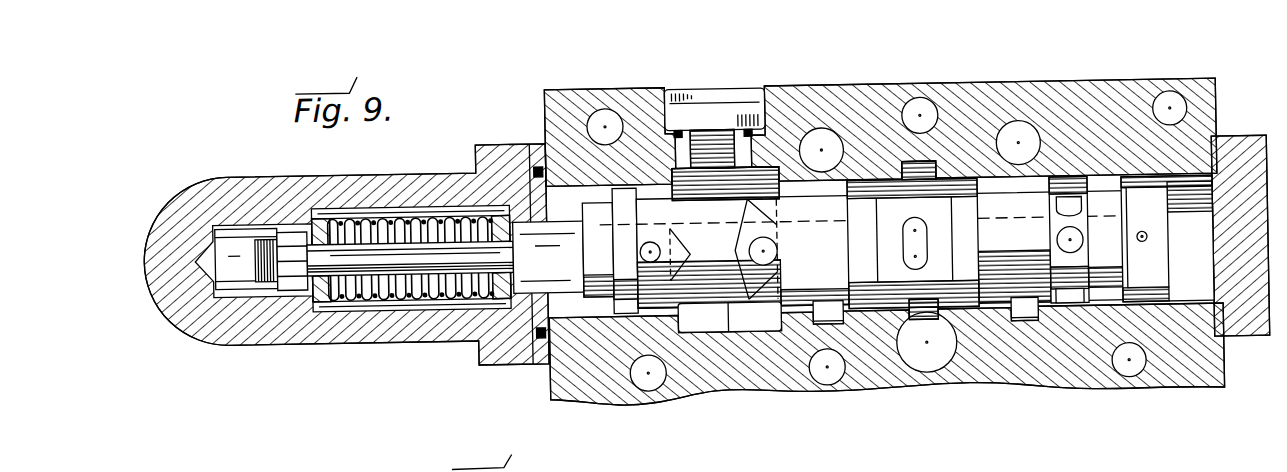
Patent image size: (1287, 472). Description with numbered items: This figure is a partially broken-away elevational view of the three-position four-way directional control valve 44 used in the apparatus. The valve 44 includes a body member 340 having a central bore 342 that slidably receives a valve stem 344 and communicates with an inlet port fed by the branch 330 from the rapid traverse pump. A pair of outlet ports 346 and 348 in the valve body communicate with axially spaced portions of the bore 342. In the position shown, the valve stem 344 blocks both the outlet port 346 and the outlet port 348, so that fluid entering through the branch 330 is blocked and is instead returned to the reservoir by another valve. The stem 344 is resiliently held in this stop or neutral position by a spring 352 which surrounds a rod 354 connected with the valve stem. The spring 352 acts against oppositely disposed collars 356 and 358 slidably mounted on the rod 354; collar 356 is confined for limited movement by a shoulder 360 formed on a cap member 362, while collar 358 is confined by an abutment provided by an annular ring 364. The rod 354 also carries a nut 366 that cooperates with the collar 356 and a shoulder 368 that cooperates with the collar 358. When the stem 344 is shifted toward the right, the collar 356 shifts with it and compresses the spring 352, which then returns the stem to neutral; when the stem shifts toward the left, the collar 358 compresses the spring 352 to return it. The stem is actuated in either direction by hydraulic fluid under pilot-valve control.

The valve 44 is at (1103, 78).
The branch 330 is at (948, 356).
The body member 340 is at (990, 82).
The central bore 342 is at (878, 302).
The valve stem 344 is at (730, 329).
The outlet port 346 is at (822, 127).
The outlet port 348 is at (1033, 130).
The spring 352 is at (415, 295).
The rod 354 is at (372, 248).
The collar 356 is at (318, 292).
The collar 358 is at (503, 297).
The shoulder 360 is at (308, 208).
The cap member 362 is at (232, 176).
The annular ring 364 is at (521, 173).
The nut 366 is at (302, 273).
The shoulder 368 is at (522, 361).